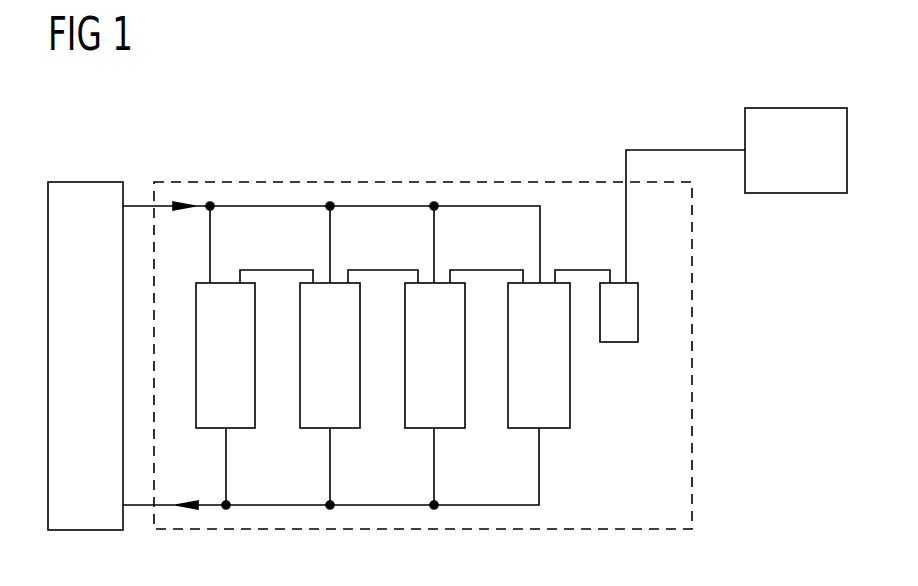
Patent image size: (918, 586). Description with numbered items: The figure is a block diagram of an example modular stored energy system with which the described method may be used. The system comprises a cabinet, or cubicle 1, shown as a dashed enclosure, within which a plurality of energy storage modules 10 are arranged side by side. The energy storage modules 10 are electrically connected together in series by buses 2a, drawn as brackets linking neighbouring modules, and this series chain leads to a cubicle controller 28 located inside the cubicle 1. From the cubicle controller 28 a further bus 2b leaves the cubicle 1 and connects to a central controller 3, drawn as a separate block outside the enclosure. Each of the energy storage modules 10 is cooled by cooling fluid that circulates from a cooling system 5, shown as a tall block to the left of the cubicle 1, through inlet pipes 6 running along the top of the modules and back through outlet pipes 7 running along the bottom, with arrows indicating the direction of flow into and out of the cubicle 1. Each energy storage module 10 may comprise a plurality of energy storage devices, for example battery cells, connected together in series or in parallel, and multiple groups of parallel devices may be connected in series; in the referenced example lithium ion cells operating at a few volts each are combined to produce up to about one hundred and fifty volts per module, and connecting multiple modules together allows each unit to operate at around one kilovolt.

The cubicle 1 is at (413, 172).
The buses 2a is at (277, 270).
The bus 2b is at (686, 150).
The central controller 3 is at (795, 108).
The cooling system 5 is at (85, 182).
The inlet pipes 6 is at (240, 210).
The outlet pipes 7 is at (249, 503).
The energy storage modules 10 is at (210, 430).
The cubicle controller 28 is at (618, 344).